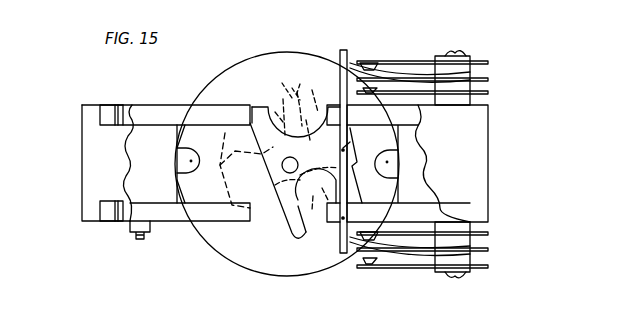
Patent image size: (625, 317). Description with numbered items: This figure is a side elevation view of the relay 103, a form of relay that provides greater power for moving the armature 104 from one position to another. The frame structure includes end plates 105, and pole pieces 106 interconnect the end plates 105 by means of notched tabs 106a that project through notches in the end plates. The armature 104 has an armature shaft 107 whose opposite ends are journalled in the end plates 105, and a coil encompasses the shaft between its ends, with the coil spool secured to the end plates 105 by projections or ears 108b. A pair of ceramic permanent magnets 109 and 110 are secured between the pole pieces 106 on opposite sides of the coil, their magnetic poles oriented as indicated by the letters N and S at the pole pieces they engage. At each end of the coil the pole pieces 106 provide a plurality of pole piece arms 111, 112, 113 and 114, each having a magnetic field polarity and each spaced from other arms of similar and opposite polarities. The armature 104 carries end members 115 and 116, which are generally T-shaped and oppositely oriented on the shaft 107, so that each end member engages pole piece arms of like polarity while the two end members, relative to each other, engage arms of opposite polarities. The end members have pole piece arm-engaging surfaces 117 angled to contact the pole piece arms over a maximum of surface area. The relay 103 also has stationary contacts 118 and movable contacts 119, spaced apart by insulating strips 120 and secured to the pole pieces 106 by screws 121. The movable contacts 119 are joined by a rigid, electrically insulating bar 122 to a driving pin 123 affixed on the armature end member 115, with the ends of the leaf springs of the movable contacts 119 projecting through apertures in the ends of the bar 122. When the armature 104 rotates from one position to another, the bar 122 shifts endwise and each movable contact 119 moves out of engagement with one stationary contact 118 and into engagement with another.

The relay 103 is at (494, 180).
The armature 104 is at (280, 92).
The end plates 105 is at (94, 160).
The pole pieces 106 is at (182, 86).
The notched tabs 106a is at (100, 117).
The armature shaft 107 is at (282, 167).
The projections or ears 108b is at (394, 154).
The ceramic permanent magnet 109 is at (432, 146).
The ceramic permanent magnet 110 is at (162, 169).
The pole piece arm 111 is at (244, 218).
The pole piece arm 112 is at (250, 106).
The pole piece arm 113 is at (346, 118).
The pole piece arm 114 is at (337, 235).
The armature end member 115 is at (296, 240).
The armature end member 116 is at (294, 76).
The pole piece arm-engaging surfaces 117 is at (250, 118).
The stationary contacts 118 is at (408, 62).
The movable contacts 119 is at (392, 64).
The insulating strips 120 is at (470, 85).
The screws 121 is at (466, 54).
The electrically insulating bar 122 is at (343, 50).
The driving pin 123 is at (352, 148).